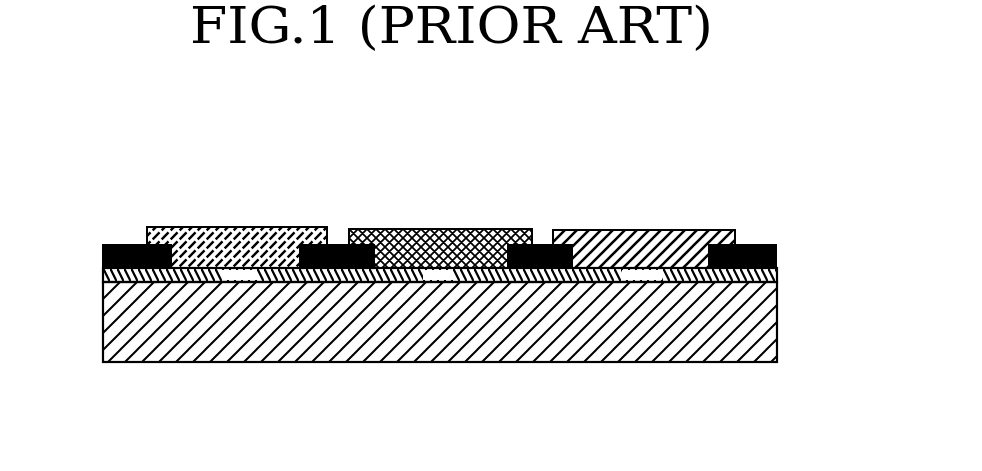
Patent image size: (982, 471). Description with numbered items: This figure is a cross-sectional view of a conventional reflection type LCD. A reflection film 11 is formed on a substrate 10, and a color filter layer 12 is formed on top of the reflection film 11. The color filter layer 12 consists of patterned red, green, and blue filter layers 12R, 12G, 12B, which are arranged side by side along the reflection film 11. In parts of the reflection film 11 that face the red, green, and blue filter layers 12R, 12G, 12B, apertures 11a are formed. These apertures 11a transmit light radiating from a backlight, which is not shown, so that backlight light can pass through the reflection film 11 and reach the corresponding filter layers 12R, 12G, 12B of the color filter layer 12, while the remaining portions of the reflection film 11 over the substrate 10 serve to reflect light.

The substrate 10 is at (768, 333).
The reflection film 11 is at (483, 350).
The apertures 11a is at (237, 283).
The color filter layer 12 is at (414, 203).
The red filter layer 12R is at (257, 227).
The green filter layer 12G is at (445, 229).
The blue filter layer 12B is at (640, 230).